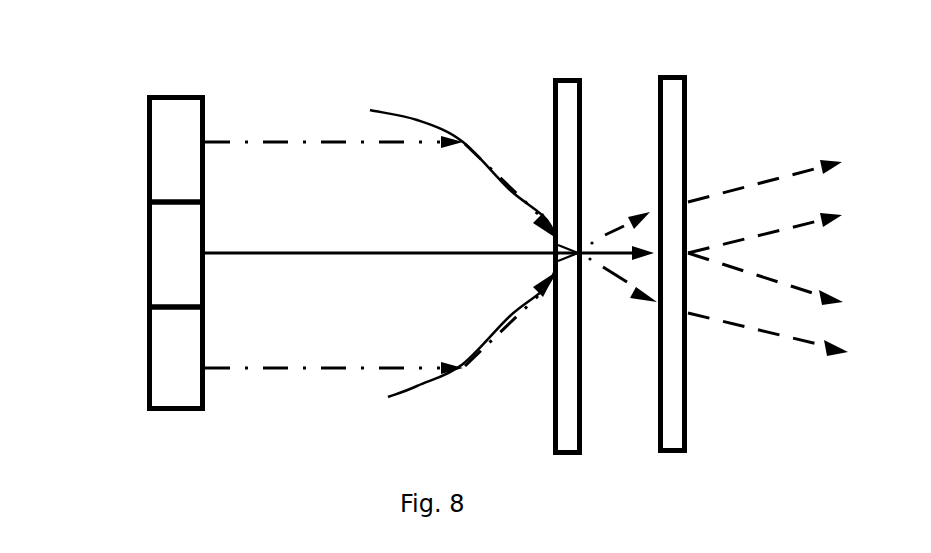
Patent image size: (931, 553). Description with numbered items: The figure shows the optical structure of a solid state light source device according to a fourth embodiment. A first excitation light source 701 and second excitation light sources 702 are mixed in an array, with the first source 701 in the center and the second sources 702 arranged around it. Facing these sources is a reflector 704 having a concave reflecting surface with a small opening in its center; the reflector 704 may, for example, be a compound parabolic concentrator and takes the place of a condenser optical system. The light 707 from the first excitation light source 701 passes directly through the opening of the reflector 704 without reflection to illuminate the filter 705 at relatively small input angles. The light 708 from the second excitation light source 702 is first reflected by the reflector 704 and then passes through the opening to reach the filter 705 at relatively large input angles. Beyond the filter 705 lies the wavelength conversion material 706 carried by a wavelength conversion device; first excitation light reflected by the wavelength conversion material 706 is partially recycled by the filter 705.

The first excitation light source 701 is at (155, 256).
The second excitation light source 702 is at (177, 95).
The reflector 704 is at (433, 118).
The filter 705 is at (565, 90).
The wavelength conversion material 706 is at (673, 88).
The light from the first excitation light source 707 is at (272, 250).
The light from the second excitation light source 708 is at (313, 132).